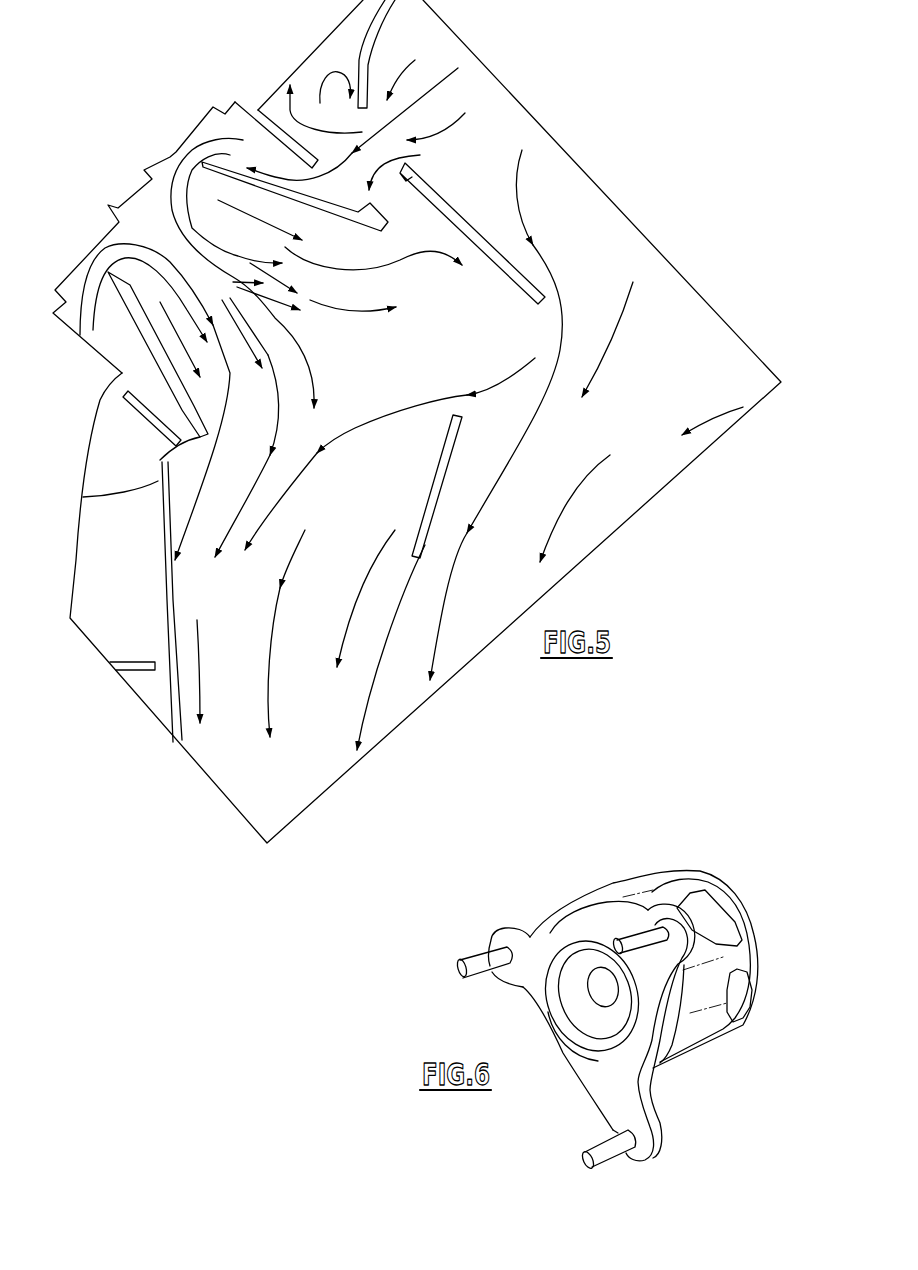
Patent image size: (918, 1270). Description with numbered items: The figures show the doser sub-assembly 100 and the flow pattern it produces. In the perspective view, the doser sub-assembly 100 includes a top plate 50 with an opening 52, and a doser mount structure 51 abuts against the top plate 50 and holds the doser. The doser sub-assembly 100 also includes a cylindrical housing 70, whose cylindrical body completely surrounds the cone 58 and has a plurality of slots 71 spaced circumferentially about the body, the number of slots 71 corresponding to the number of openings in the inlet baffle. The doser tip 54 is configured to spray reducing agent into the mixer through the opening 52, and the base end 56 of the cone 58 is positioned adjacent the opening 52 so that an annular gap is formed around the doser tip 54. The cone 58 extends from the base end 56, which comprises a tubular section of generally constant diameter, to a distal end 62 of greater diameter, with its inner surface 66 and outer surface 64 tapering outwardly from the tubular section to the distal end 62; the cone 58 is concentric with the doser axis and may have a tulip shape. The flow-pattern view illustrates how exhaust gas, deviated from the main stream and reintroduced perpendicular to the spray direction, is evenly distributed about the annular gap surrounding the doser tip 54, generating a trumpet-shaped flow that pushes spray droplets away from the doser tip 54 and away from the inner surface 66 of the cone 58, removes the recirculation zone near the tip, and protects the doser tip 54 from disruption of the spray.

In FIG. 6, the top plate 50 is at (573, 908).
In FIG. 6, the doser mount structure 51 is at (613, 1100).
In FIG. 6, the opening 52 is at (607, 993).
In FIG. 5, the doser tip 54 is at (128, 187).
In FIG. 5, the base end 56 is at (110, 272).
In FIG. 5, the cone 58 is at (170, 430).
In FIG. 5, the distal end 62 is at (160, 460).
In FIG. 5, the outer surface 64 is at (304, 155).
In FIG. 5, the inner surface 66 is at (247, 183).
In FIG. 6, the cylindrical housing 70 is at (700, 1027).
In FIG. 6, the slot 71 is at (707, 890).
In FIG. 6, the doser sub-assembly 100 is at (624, 975).